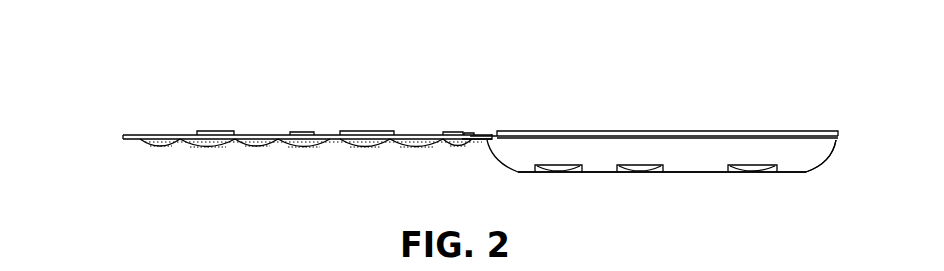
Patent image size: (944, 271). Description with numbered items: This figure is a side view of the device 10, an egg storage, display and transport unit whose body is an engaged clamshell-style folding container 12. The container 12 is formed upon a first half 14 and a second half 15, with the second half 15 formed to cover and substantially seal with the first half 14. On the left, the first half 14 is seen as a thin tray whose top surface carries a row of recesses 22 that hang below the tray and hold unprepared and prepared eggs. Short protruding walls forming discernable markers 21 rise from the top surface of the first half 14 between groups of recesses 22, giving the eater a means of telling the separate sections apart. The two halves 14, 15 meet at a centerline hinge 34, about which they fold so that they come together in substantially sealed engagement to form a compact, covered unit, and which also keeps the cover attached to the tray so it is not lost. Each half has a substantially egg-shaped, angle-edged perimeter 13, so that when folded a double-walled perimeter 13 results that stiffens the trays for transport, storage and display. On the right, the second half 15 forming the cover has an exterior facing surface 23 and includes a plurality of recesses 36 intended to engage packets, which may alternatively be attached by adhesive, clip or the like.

The device 10 is at (624, 80).
The folding container 12 is at (470, 134).
The angle-edged perimeter 13 is at (333, 139).
The first half 14 is at (138, 138).
The second half 15 is at (814, 163).
The discernable marker 21 is at (221, 132).
The recesses 22 is at (267, 149).
The exterior facing surface 23 is at (790, 172).
The centerline hinge 34 is at (485, 141).
The recesses 36 is at (735, 173).